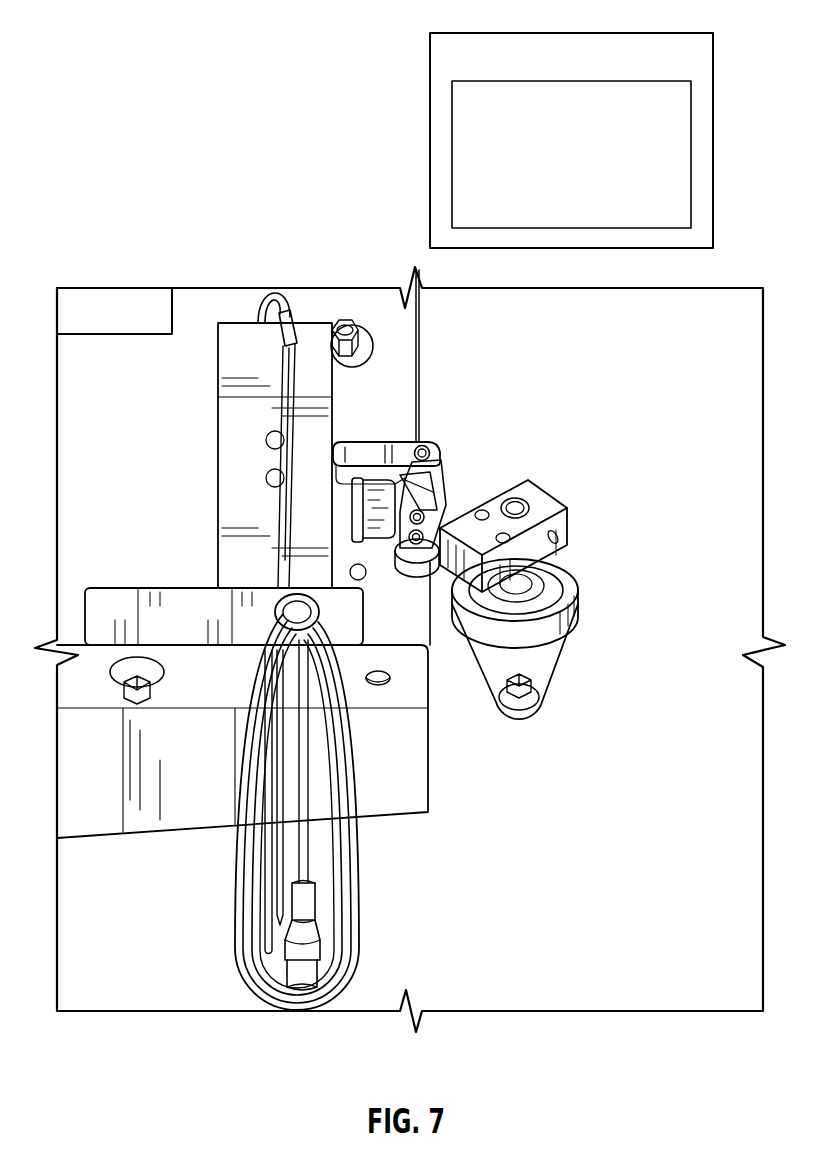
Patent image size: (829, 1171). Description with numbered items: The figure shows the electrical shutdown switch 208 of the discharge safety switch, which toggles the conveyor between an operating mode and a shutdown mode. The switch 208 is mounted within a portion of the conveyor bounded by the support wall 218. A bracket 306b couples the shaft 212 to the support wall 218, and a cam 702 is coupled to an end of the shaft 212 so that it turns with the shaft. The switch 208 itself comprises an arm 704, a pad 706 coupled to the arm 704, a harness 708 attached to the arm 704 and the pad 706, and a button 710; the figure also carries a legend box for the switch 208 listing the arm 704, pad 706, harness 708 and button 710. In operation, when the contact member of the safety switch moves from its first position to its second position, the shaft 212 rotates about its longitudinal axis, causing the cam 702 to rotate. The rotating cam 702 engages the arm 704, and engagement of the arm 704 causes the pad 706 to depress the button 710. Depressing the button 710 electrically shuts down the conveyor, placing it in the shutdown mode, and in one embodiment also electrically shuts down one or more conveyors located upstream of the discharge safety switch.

The switch 208 is at (495, 33).
The support wall 218 is at (688, 375).
The cam 702 is at (525, 488).
The arm 704 is at (434, 502).
The pad 706 is at (436, 478).
The harness 708 is at (362, 453).
The button 710 is at (383, 491).
The shaft 212 is at (563, 557).
The bracket 306b is at (535, 668).